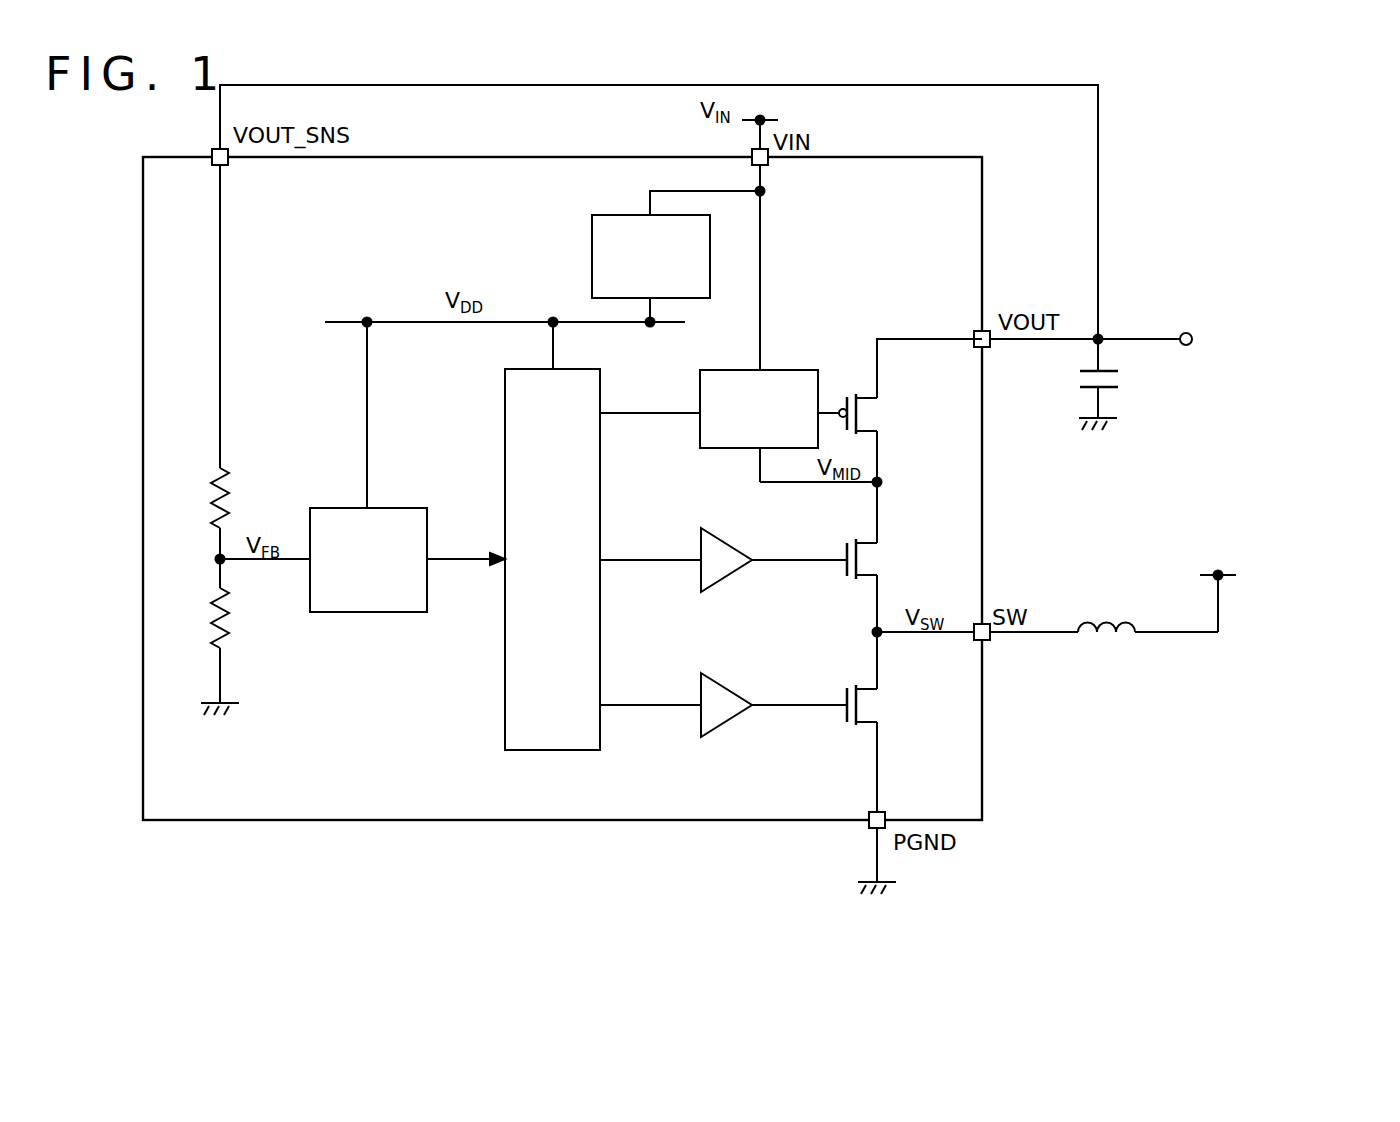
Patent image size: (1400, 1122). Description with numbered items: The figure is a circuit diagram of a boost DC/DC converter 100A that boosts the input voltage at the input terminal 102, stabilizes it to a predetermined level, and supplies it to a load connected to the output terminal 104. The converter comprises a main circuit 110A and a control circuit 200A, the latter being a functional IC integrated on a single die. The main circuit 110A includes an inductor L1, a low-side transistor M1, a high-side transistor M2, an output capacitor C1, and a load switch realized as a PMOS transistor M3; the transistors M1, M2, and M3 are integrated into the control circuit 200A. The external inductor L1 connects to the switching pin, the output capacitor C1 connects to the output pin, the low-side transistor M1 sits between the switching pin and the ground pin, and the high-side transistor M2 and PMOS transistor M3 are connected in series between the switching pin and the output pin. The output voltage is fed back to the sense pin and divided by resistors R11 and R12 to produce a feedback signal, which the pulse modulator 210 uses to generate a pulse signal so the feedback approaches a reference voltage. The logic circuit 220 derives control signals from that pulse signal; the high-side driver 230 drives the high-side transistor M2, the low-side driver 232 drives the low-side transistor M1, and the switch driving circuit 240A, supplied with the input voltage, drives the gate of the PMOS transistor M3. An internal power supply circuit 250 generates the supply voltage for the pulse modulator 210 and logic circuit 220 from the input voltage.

The boost DC/DC converter 100A is at (1390, 71).
The input terminal 102 is at (778, 120).
The output terminal 104 is at (1208, 314).
The main circuit 110A is at (999, 681).
The control circuit 200A is at (912, 157).
The pulse modulator 210 is at (331, 506).
The logic circuit 220 is at (587, 368).
The high-side driver 230 is at (724, 546).
The low-side driver 232 is at (724, 692).
The switch driving circuit 240A is at (795, 368).
The internal power supply circuit 250 is at (590, 258).
The low-side transistor M1 is at (883, 705).
The high-side transistor M2 is at (883, 558).
The PMOS transistor M3 is at (880, 412).
The resistor R11 is at (193, 498).
The resistor R12 is at (193, 618).
The output capacitor C1 is at (1118, 384).
The inductor L1 is at (1104, 612).